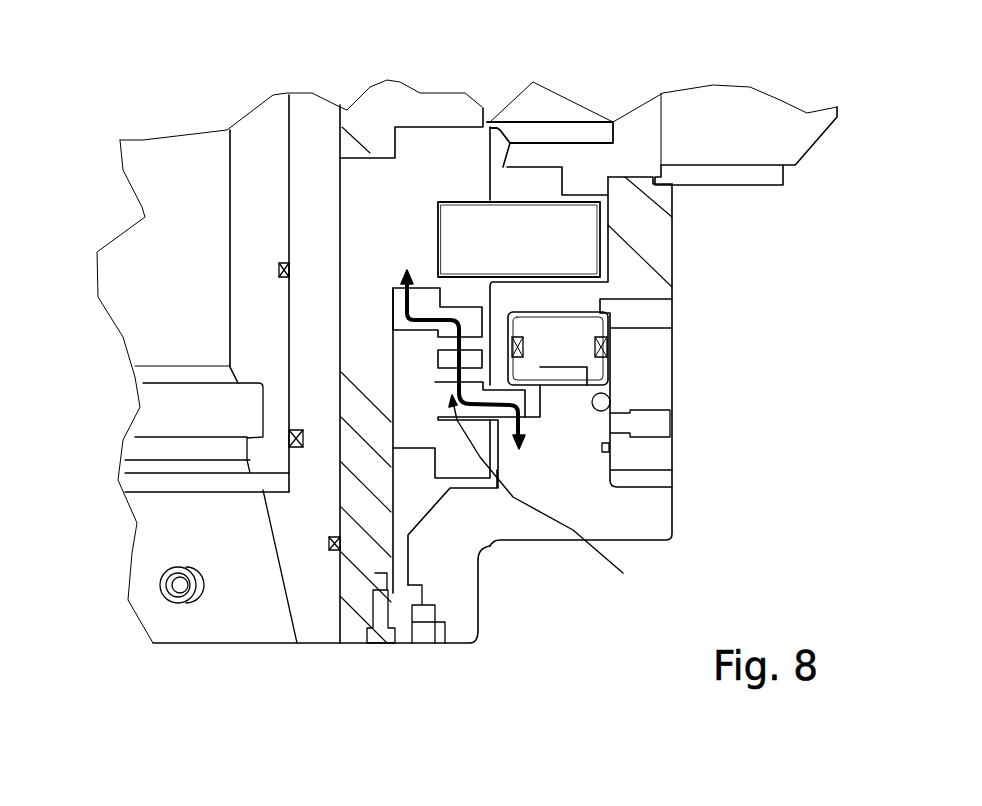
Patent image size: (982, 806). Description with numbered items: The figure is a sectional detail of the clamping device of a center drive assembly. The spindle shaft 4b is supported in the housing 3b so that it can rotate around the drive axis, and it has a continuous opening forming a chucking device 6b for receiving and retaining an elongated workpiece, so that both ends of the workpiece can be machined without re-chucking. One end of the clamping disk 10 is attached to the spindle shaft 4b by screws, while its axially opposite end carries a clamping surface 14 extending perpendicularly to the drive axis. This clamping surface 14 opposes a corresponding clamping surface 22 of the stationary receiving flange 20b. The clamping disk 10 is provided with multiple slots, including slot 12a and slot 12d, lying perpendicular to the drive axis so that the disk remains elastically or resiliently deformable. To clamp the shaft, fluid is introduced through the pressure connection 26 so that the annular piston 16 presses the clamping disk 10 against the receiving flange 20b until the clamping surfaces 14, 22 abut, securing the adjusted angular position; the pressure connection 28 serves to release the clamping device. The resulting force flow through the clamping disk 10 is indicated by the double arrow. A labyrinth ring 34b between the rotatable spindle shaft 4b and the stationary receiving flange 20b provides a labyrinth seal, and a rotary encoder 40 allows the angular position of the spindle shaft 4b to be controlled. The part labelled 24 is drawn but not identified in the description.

The annular piston 16 is at (563, 353).
The clamping disk 10 is at (405, 322).
The slot 12a is at (440, 343).
The slot 12d is at (445, 373).
The spindle shaft 4b is at (370, 492).
The chucking device 6b is at (157, 525).
The rotary encoder 40 is at (582, 237).
The housing 3b is at (747, 113).
The pressure connection 26 is at (668, 312).
The bearing 24 is at (528, 410).
The pressure connection 28 is at (665, 418).
The clamping surface 22 is at (500, 433).
The clamping surface 14 is at (558, 496).
The receiving flange 20b is at (460, 557).
The labyrinth ring 34b is at (405, 632).